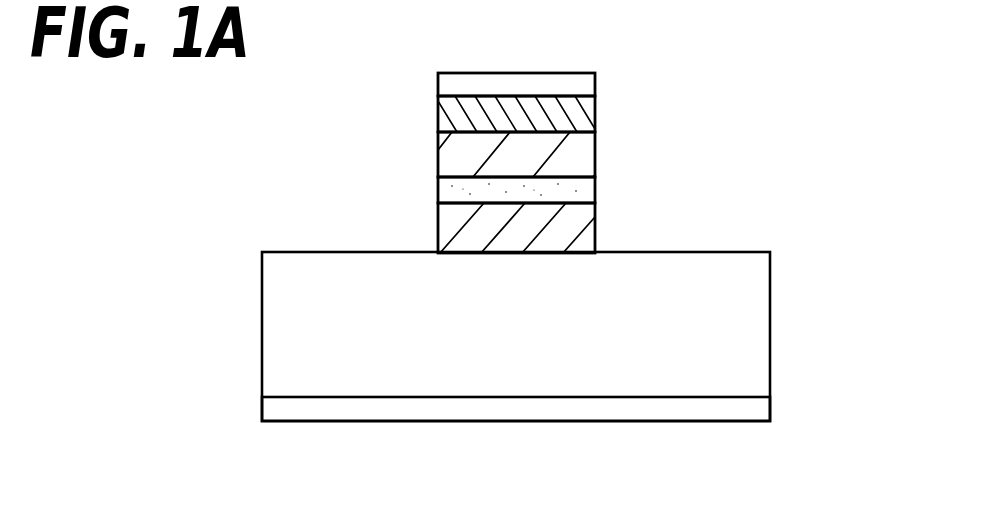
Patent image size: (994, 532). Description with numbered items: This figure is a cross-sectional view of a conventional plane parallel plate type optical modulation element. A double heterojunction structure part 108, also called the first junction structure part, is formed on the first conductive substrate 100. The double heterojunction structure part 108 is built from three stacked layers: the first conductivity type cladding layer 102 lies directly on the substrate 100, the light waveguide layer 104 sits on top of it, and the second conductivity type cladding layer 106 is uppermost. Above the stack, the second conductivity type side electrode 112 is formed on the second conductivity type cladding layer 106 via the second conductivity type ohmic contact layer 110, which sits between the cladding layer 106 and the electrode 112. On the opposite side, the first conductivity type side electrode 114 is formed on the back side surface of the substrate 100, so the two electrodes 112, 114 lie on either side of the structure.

The first conductive substrate 100 is at (770, 327).
The first conductivity type cladding layer 102 is at (595, 220).
The light waveguide layer 104 is at (595, 188).
The second conductivity type cladding layer 106 is at (595, 158).
The double heterojunction structure part 108 is at (616, 192).
The second conductivity type ohmic contact layer 110 is at (595, 120).
The second conductivity type side electrode 112 is at (595, 82).
The first conductivity type side electrode 114 is at (770, 412).